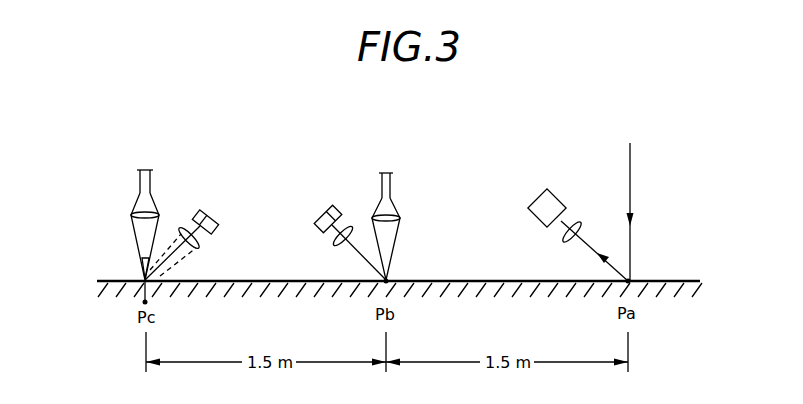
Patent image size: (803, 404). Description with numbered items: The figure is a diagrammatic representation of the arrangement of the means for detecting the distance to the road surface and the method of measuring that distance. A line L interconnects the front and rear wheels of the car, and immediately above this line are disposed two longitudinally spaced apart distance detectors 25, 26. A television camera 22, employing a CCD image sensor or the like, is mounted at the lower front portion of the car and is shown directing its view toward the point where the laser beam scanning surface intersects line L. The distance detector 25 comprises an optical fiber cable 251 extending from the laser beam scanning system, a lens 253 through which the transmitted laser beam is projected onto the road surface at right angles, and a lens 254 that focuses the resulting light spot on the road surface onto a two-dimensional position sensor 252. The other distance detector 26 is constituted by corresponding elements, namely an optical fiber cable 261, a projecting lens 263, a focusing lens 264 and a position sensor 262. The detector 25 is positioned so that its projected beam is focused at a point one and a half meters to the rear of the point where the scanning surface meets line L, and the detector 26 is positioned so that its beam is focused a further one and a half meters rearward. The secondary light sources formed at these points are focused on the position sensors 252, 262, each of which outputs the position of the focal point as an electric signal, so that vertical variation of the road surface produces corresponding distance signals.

The television camera 22 is at (570, 180).
The distance detector 25 is at (367, 132).
The distance detector 26 is at (195, 132).
The optical fiber cable 251 is at (391, 183).
The position sensor 252 is at (324, 207).
The lens 253 is at (398, 221).
The lens 254 is at (341, 243).
The optical fiber cable 261 is at (150, 182).
The position sensor 262 is at (213, 221).
The lens 263 is at (131, 216).
The lens 264 is at (198, 244).
The line L is at (675, 281).